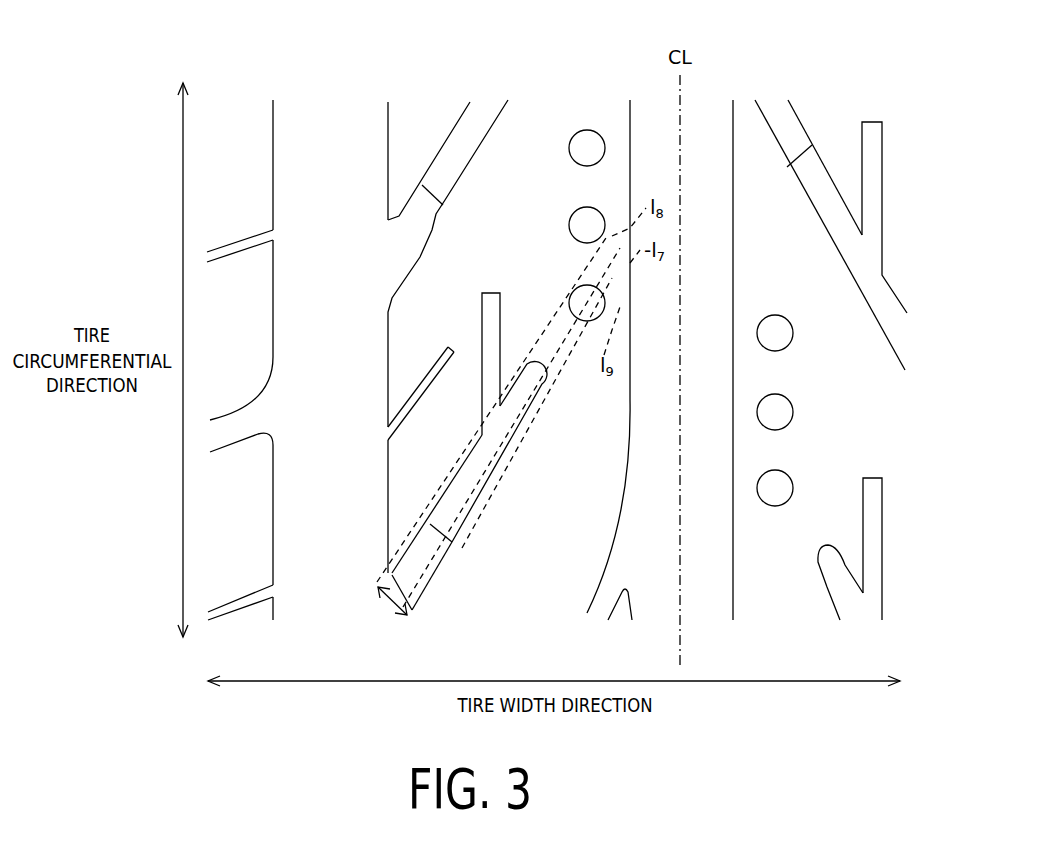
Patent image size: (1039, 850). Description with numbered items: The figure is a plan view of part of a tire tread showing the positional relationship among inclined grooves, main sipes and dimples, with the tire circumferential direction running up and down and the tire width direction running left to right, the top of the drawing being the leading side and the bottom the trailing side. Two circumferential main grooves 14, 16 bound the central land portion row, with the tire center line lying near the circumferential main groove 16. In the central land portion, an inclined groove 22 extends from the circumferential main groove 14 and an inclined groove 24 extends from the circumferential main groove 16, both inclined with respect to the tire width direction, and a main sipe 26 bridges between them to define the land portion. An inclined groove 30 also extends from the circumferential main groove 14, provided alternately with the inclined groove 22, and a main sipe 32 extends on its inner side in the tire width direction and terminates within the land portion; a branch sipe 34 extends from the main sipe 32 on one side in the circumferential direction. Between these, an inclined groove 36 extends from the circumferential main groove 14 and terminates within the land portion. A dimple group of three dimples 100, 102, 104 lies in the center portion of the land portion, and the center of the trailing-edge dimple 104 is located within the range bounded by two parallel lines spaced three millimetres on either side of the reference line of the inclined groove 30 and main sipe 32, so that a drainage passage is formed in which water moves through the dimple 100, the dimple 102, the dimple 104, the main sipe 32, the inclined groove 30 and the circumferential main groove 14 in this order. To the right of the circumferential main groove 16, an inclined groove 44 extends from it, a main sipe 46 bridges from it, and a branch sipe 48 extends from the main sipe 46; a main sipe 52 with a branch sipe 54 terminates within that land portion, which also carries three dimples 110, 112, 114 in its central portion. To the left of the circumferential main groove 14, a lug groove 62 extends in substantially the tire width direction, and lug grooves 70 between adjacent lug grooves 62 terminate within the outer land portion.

The circumferential main groove 14 is at (342, 120).
The circumferential main groove 16 is at (700, 113).
The inclined groove 22 is at (402, 212).
The inclined groove 24 is at (590, 608).
The main sipe 26 is at (466, 112).
The inclined groove 30 is at (425, 563).
The main sipe 32 is at (537, 393).
The branch sipe 34 is at (488, 295).
The inclined groove 36 is at (420, 385).
The inclined groove 44 is at (793, 113).
The main sipe 46 is at (822, 212).
The branch sipe 48 is at (872, 130).
The main sipe 52 is at (828, 590).
The branch sipe 54 is at (872, 505).
The lug groove 62 is at (236, 418).
The lug groove 70 is at (236, 248).
The dimple 100 is at (578, 140).
The dimple 102 is at (578, 216).
The dimple 104 is at (578, 295).
The dimple 110 is at (793, 336).
The dimple 112 is at (793, 414).
The dimple 114 is at (793, 490).